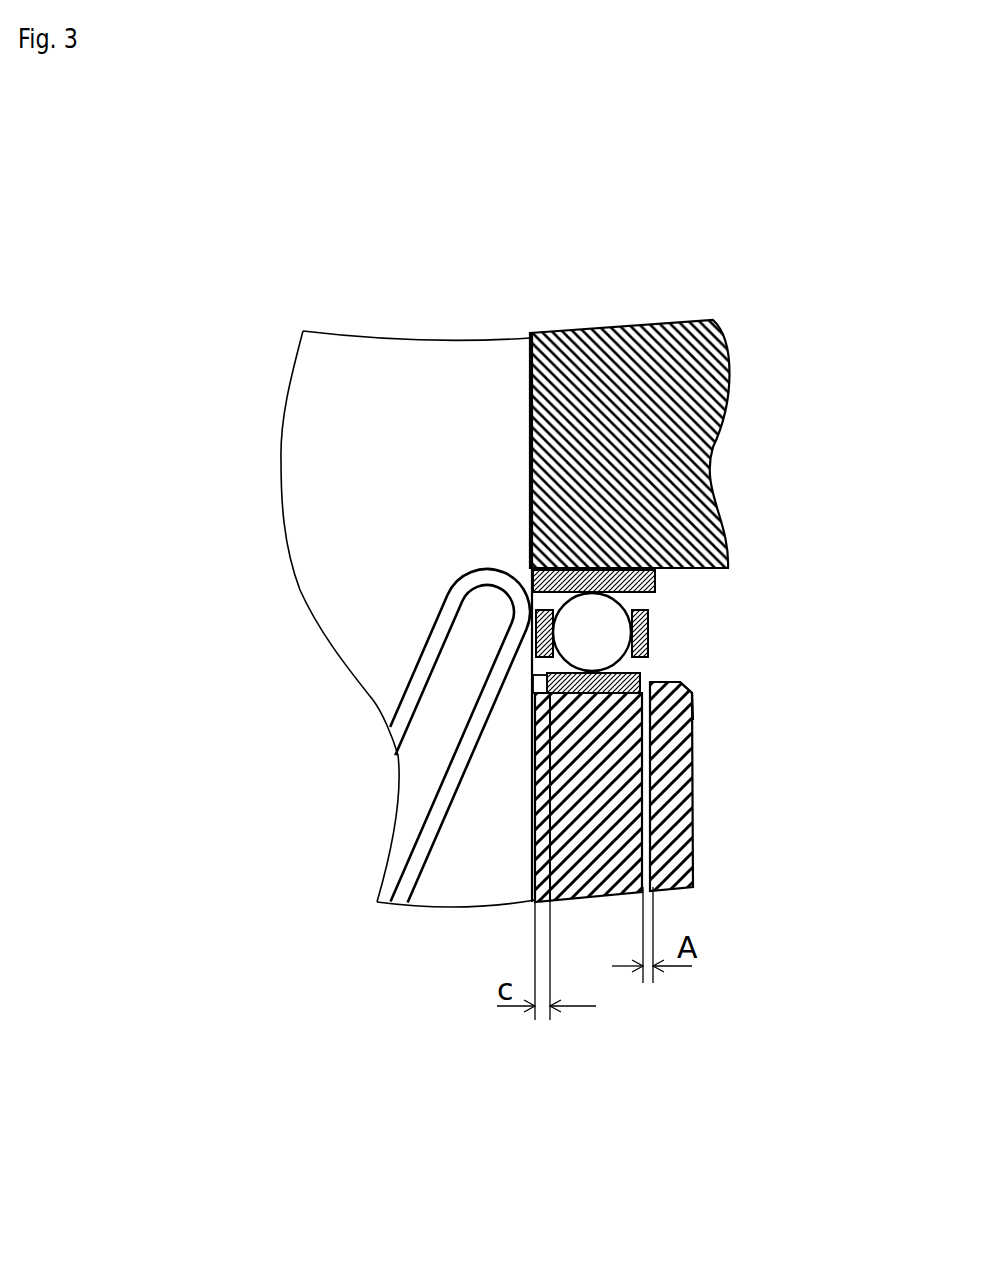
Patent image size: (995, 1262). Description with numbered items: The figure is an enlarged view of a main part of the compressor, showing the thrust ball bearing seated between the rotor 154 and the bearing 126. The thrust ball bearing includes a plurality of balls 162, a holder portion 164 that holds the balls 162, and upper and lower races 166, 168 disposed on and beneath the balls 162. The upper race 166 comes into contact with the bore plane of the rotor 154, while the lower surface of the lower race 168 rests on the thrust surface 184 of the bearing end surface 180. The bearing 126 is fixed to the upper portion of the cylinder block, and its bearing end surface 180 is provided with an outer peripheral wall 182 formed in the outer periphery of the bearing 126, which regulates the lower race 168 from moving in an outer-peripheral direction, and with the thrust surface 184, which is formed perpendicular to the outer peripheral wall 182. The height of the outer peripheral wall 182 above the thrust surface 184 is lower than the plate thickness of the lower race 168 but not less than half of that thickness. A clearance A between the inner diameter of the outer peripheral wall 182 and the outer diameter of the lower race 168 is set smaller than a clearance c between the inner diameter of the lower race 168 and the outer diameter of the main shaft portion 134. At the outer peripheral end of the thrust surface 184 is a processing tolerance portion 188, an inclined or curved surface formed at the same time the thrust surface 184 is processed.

The bearing 126 is at (588, 695).
The main shaft portion 134 is at (360, 565).
The rotor 154 is at (665, 457).
The balls 162 is at (588, 615).
The holder portion 164 is at (648, 630).
The upper race 166 is at (655, 582).
The lower race 168 is at (545, 687).
The bearing end surface 180 is at (692, 793).
The outer peripheral wall 182 is at (643, 686).
The thrust surface 184 is at (598, 695).
The processing tolerance portion 188 is at (692, 718).